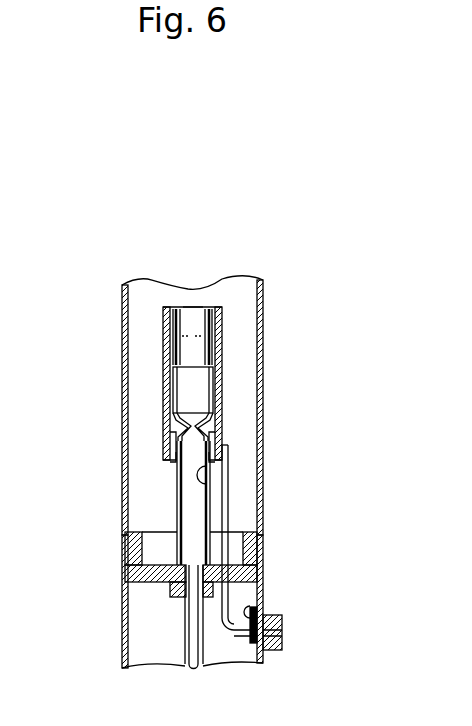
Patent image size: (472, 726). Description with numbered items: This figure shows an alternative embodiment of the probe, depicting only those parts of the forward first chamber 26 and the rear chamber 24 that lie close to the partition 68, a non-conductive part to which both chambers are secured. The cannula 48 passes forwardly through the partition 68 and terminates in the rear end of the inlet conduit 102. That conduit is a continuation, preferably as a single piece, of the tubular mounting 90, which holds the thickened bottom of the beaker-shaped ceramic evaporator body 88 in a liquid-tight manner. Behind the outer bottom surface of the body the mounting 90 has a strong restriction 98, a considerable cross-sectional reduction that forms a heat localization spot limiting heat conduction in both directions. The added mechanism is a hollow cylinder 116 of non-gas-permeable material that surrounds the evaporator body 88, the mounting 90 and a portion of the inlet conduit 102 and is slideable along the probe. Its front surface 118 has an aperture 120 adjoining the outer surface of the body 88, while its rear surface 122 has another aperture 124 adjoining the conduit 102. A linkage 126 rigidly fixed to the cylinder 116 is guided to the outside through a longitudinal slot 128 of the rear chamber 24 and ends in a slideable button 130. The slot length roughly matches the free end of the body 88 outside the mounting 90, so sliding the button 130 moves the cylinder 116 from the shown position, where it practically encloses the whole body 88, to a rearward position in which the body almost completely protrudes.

The rear chamber 24 is at (125, 605).
The first chamber 26 is at (262, 390).
The cannula 48 is at (192, 638).
The partition 68 is at (262, 567).
The evaporator body 88 is at (178, 337).
The tubular mounting 90 is at (198, 382).
The restriction 98 is at (205, 428).
The inlet conduit 102 is at (190, 495).
The hollow cylinder 116 is at (222, 338).
The front surface 118 is at (214, 304).
The aperture 120 is at (187, 306).
The rear surface 122 is at (170, 442).
The aperture 124 is at (200, 482).
The linkage 126 is at (227, 515).
The longitudinal slot 128 is at (255, 602).
The slideable button 130 is at (282, 636).